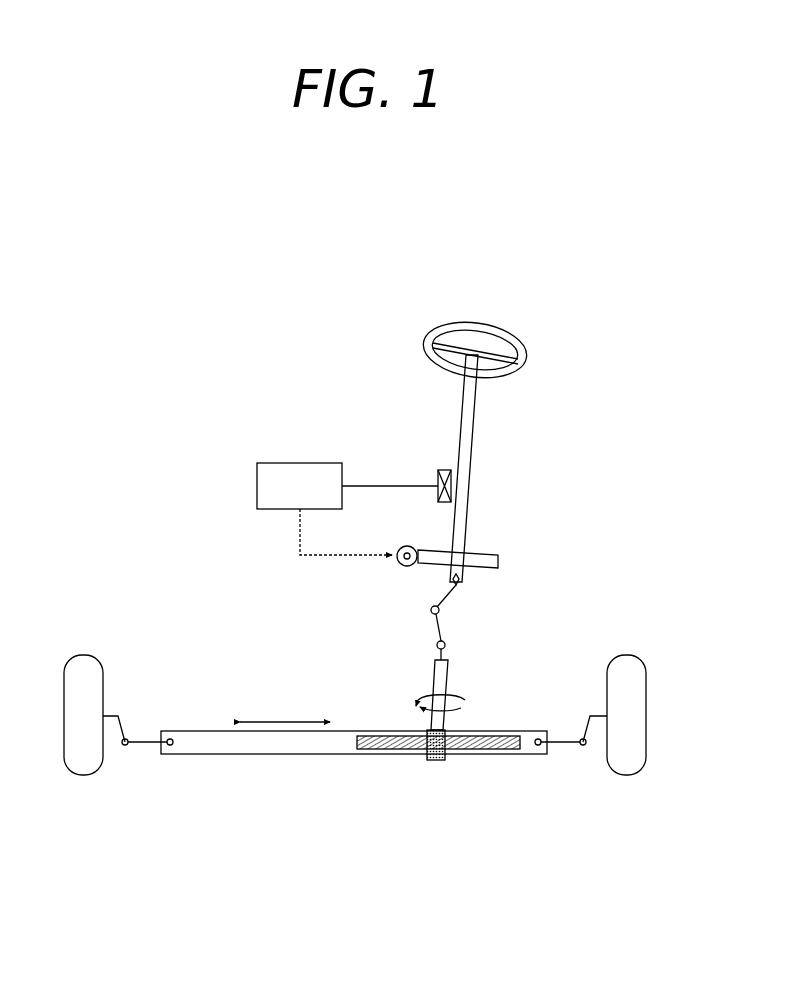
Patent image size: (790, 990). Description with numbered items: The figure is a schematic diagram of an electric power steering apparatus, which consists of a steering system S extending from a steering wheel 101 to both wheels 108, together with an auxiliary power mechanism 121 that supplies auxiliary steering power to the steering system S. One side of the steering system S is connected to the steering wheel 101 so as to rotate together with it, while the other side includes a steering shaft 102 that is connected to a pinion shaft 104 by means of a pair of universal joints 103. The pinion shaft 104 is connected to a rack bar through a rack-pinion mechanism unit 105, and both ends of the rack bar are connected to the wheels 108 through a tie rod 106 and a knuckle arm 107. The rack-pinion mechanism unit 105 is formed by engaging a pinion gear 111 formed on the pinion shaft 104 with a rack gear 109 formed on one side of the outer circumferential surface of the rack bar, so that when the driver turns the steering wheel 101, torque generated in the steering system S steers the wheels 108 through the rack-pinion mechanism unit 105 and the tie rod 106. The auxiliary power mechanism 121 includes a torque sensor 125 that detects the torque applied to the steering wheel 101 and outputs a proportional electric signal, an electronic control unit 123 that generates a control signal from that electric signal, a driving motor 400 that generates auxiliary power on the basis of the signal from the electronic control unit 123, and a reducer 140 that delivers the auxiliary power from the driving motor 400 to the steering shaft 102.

The steering system S is at (263, 331).
The steering wheel 101 is at (431, 348).
The steering shaft 102 is at (478, 432).
The universal joints 103 is at (447, 598).
The pinion shaft 104 is at (434, 690).
The rack-pinion mechanism unit 105 is at (470, 822).
The tie rod 106 is at (572, 735).
The knuckle arm 107 is at (108, 712).
The wheels 108 is at (633, 665).
The rack gear 109 is at (482, 757).
The pinion gear 111 is at (430, 765).
The auxiliary power mechanism 121 is at (247, 459).
The electronic control unit 123 is at (313, 462).
The torque sensor 125 is at (442, 470).
The reducer 140 is at (482, 551).
The driving motor 400 is at (408, 546).